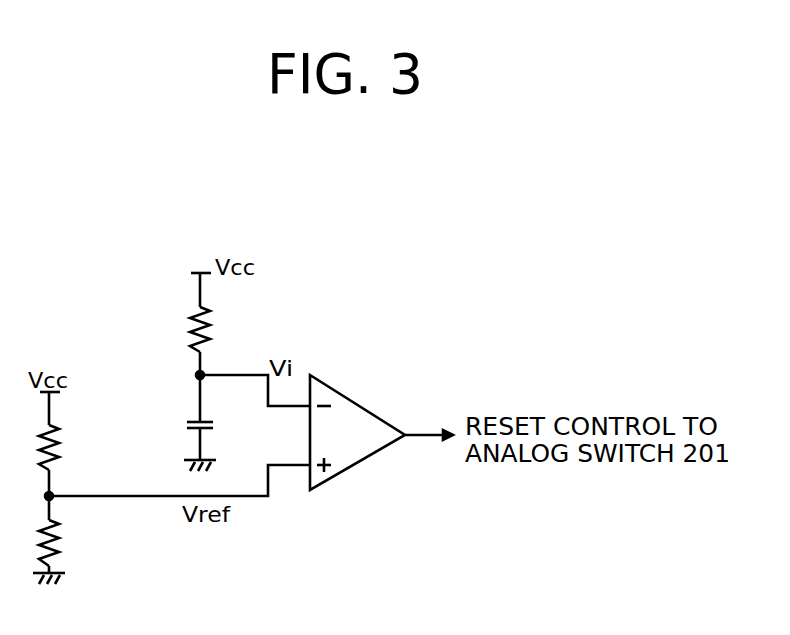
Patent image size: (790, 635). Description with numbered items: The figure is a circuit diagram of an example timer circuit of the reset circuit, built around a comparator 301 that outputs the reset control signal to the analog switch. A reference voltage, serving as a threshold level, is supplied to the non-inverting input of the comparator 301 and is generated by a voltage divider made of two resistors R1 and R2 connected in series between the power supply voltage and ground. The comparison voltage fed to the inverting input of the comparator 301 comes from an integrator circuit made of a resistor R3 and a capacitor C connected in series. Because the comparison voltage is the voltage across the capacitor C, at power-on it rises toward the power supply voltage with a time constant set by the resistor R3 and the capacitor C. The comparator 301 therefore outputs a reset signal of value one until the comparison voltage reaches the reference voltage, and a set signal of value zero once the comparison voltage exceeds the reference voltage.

The comparator 301 is at (357, 396).
The resistor R1 is at (67, 447).
The resistor R2 is at (67, 543).
The resistor R3 is at (218, 329).
The capacitor C is at (211, 429).